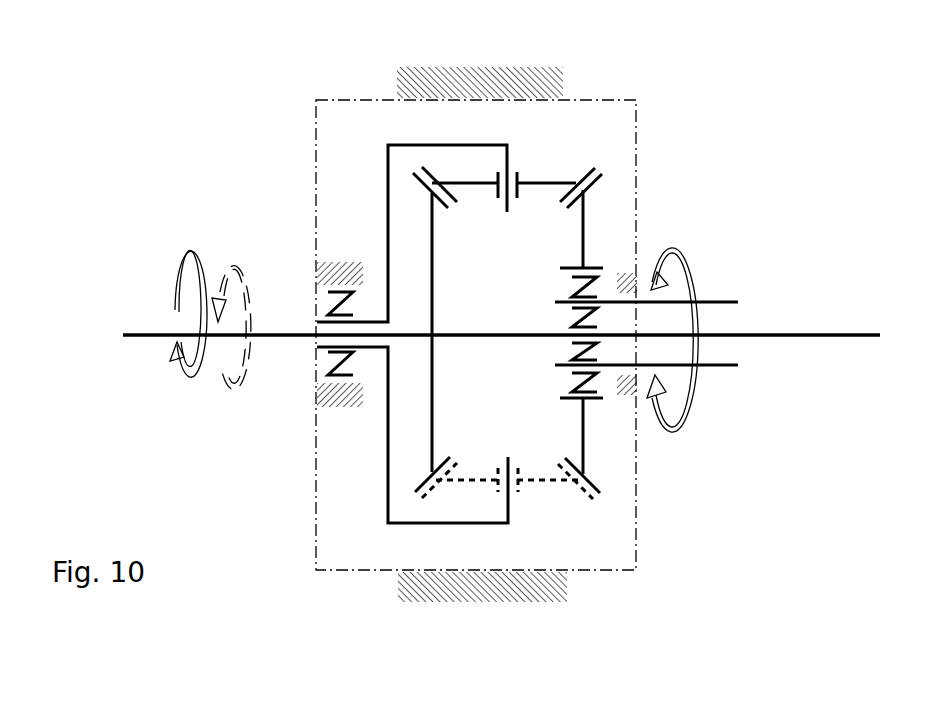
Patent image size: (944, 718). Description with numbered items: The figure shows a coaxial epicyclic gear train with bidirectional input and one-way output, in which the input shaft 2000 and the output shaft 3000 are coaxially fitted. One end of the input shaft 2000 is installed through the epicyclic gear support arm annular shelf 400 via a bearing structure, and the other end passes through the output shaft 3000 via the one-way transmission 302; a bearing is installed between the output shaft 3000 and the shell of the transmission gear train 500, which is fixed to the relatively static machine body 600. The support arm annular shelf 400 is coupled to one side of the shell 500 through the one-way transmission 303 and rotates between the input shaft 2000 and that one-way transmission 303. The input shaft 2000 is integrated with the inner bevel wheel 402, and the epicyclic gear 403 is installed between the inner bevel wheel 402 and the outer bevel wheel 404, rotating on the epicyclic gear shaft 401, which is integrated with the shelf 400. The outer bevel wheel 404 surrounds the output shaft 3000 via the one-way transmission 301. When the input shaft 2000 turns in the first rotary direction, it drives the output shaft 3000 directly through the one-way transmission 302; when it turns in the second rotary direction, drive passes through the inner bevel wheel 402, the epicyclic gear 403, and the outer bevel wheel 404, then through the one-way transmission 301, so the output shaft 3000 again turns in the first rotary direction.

The input shaft 2000 is at (150, 335).
The output shaft 3000 is at (713, 302).
The one-way transmission 303 is at (322, 303).
The shell of the transmission gear train 500 is at (315, 178).
The machine body 600 is at (480, 92).
The epicyclic gear support arm annular shelf 400 is at (427, 524).
The epicyclic gear shaft 401 is at (510, 169).
The inner bevel wheel 402 is at (453, 460).
The epicyclic gear 403 is at (590, 171).
The outer bevel wheel 404 is at (597, 188).
The one-way transmission 301 is at (572, 282).
The one-way transmission 302 is at (572, 345).